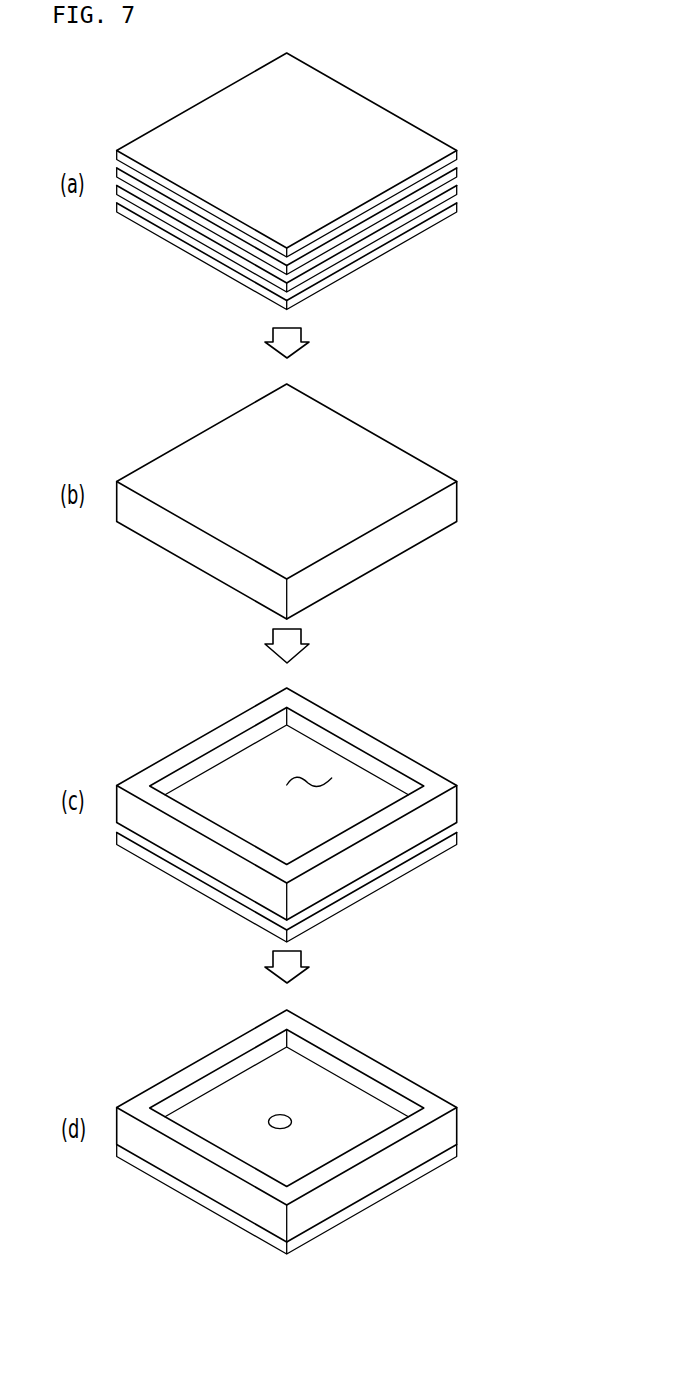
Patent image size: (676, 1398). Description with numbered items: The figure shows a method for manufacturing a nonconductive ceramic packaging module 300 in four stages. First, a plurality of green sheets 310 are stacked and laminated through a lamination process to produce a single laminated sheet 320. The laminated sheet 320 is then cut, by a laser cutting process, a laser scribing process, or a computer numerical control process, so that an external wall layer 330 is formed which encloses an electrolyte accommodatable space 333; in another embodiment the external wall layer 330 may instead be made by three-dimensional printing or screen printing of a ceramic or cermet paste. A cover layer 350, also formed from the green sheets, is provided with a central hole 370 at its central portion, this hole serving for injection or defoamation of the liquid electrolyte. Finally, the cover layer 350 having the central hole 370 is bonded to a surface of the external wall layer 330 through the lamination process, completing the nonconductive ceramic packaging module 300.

The green sheets 310 is at (459, 155).
The laminated sheet 320 is at (448, 502).
The external wall layer 330 is at (448, 805).
The electrolyte accommodatable space 333 is at (309, 783).
The cover layer 350 is at (448, 838).
The central hole 370 is at (281, 1115).
The nonconductive ceramic packaging module 300 is at (511, 1122).